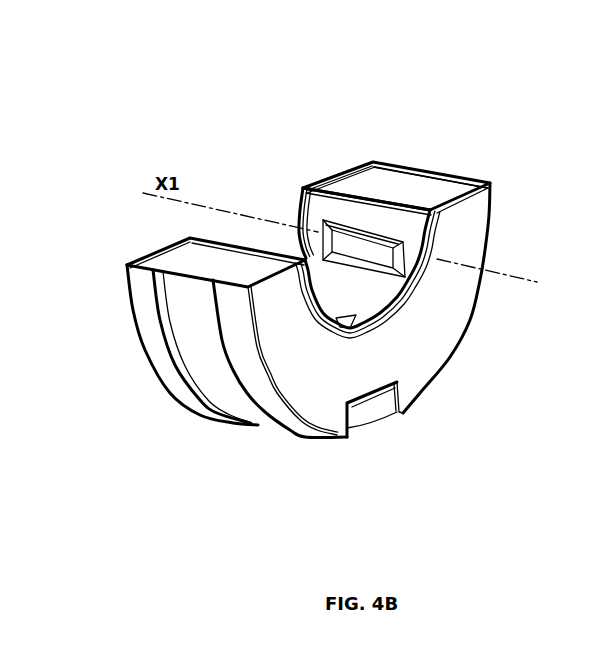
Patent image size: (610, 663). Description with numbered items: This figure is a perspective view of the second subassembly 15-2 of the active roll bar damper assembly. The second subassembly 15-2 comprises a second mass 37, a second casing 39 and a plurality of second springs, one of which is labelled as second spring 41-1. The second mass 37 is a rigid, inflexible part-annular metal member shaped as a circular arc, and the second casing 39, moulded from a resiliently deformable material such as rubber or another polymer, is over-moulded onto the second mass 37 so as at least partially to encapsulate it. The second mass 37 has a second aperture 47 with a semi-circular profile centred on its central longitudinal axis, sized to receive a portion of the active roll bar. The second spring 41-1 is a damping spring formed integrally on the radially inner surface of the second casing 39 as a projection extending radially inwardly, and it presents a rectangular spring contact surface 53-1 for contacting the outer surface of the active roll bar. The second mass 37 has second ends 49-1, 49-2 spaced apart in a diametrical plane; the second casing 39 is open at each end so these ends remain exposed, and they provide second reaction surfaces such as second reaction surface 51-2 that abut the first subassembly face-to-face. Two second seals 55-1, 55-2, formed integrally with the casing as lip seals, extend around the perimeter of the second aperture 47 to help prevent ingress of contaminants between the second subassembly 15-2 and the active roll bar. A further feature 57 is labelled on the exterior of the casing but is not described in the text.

The second subassembly 15-2 is at (174, 131).
The second mass 37 is at (386, 410).
The second casing 39 is at (468, 228).
The second spring 41-1 is at (183, 250).
The second aperture 47 is at (262, 241).
The second end 49-1 is at (154, 251).
The second end 49-2 is at (419, 165).
The second reaction surface 51-2 is at (382, 172).
The spring contact surface 53-1 is at (342, 240).
The second seal 55-1 is at (303, 200).
The second seal 55-2 is at (403, 300).
The outer rib 57 is at (202, 358).